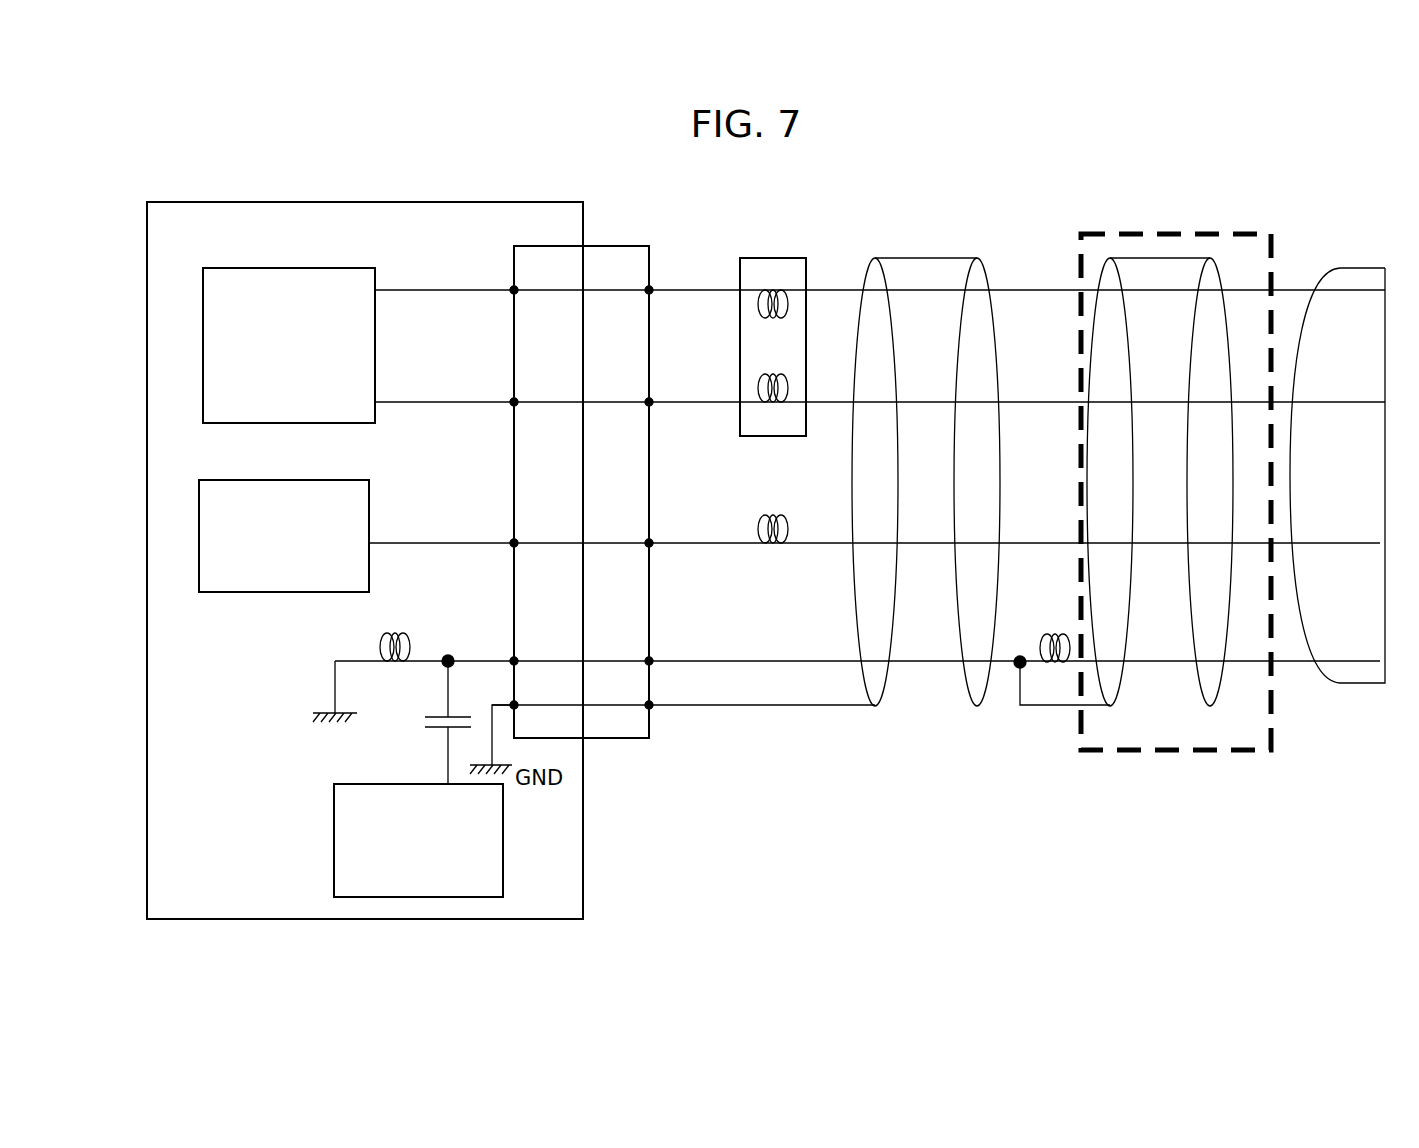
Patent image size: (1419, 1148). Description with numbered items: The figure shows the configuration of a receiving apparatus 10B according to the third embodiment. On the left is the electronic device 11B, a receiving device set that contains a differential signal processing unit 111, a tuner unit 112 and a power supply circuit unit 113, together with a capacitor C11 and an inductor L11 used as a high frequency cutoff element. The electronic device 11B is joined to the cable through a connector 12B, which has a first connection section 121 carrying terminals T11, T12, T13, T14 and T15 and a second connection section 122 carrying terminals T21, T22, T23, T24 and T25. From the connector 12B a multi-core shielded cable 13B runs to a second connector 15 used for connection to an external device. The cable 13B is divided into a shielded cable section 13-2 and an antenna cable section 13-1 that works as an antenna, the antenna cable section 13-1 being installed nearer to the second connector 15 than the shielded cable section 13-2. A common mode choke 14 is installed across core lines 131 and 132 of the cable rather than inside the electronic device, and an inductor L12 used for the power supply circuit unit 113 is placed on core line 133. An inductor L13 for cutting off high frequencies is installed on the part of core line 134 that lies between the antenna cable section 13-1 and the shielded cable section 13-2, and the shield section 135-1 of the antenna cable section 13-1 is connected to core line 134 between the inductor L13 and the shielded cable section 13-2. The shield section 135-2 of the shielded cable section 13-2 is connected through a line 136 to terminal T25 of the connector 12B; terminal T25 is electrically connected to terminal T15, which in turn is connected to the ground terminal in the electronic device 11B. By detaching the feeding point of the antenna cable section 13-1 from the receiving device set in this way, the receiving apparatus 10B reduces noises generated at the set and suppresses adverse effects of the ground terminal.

The receiving apparatus 10B is at (998, 856).
The electronic device 11B is at (583, 826).
The differential signal processing unit 111 is at (298, 266).
The tuner unit 112 is at (334, 838).
The power supply circuit unit 113 is at (285, 594).
The first connection section 121 is at (540, 246).
The second connection section 122 is at (630, 740).
The connector 12B is at (611, 242).
The multi-core shielded cable 13B is at (1043, 223).
The antenna cable section 13-1 is at (1176, 522).
The shielded cable section 13-2 is at (925, 526).
The core line 131 is at (1031, 293).
The core line 132 is at (1031, 405).
The core line 133 is at (1033, 540).
The core line 134 is at (1012, 666).
The shield section 135-1 is at (1122, 678).
The shield section 135-2 is at (880, 708).
The line 136 is at (770, 708).
The common mode choke 14 is at (770, 252).
The second connector 15 is at (1360, 686).
The inductor L11 is at (399, 634).
The inductor L12 is at (770, 514).
The inductor L13 is at (1045, 634).
The capacitor C11 is at (425, 725).
The terminal T11 is at (515, 290).
The terminal T12 is at (515, 402).
The terminal T13 is at (515, 543).
The terminal T14 is at (515, 661).
The terminal T15 is at (515, 705).
The terminal T21 is at (650, 290).
The terminal T22 is at (650, 402).
The terminal T23 is at (650, 543).
The terminal T24 is at (650, 661).
The terminal T25 is at (650, 705).